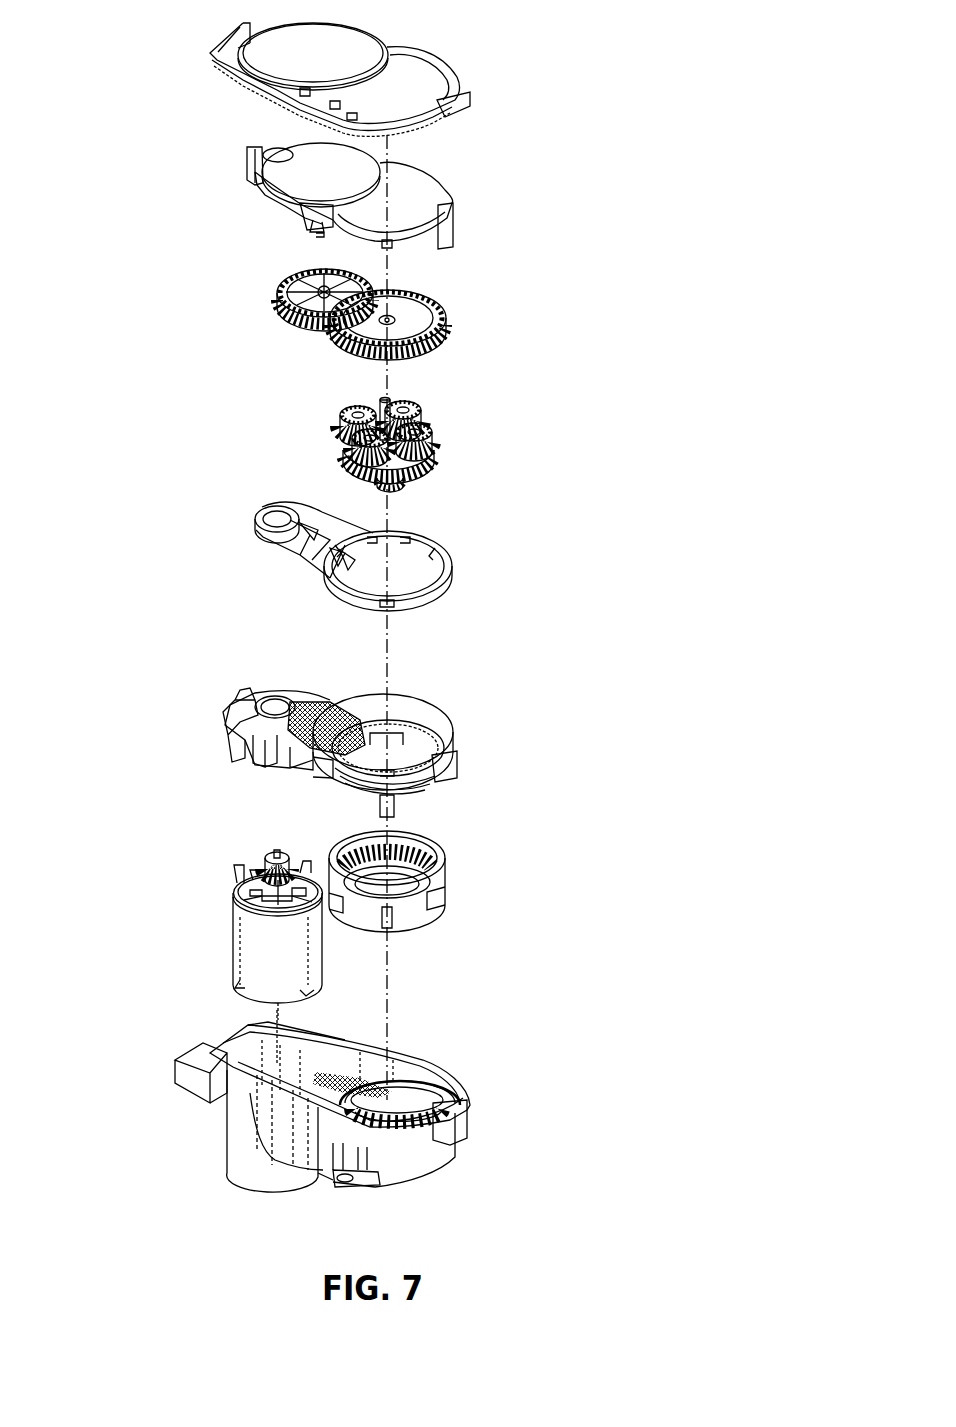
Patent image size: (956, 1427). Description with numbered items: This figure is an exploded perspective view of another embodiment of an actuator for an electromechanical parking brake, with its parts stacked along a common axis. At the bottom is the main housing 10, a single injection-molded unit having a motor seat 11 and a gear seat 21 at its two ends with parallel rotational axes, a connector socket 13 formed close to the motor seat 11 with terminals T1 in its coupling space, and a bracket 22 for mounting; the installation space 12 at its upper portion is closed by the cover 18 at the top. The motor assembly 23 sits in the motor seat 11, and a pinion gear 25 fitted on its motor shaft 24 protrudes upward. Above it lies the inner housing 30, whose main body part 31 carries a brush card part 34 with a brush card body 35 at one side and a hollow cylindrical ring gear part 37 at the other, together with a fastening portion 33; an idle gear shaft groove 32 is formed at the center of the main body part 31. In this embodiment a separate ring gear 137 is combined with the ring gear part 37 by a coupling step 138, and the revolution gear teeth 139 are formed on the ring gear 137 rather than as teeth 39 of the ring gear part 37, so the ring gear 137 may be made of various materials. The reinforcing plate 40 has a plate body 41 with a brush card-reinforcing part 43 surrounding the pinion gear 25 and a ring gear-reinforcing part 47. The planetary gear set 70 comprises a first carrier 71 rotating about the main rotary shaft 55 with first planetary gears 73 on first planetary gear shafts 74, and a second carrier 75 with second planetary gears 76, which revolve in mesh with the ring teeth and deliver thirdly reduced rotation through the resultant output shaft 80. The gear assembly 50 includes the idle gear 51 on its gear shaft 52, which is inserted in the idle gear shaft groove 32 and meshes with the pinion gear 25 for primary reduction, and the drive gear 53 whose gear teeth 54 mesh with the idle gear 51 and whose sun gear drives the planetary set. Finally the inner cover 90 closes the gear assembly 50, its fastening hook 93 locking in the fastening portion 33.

The main housing 10 is at (315, 1104).
The motor seat 11 is at (290, 1190).
The installation space 12 is at (413, 1070).
The connector socket 13 is at (177, 1070).
The cover 18 is at (425, 60).
The gear seat 21 is at (433, 1160).
The bracket 22 is at (363, 1187).
The motor assembly 23 is at (213, 920).
The motor shaft 24 is at (240, 883).
The pinion gear 25 is at (263, 857).
The inner housing 30 is at (351, 747).
The main body part 31 is at (293, 763).
The idle gear shaft groove 32 is at (333, 710).
The fastening portion 33 is at (450, 763).
The brush card part 34 is at (230, 710).
The brush card body 35 is at (250, 743).
The ring gear part 37 is at (423, 780).
The revolution gear teeth 39 is at (407, 738).
The reinforcing plate 40 is at (369, 554).
The plate body 41 is at (283, 552).
The brush card-reinforcing part 43 is at (268, 515).
The ring gear-reinforcing part 47 is at (447, 583).
The gear assembly 50 is at (435, 310).
The idle gear 51 is at (278, 302).
The gear shaft 52 is at (280, 288).
The drive gear 53 is at (407, 312).
The gear teeth 54 is at (445, 322).
The main rotary shaft 55 is at (388, 405).
The planetary gear set 70 is at (450, 437).
The first carrier 71 is at (433, 442).
The first planetary gears 73 is at (417, 415).
The first planetary gear shafts 74 is at (357, 410).
The second carrier 75 is at (343, 462).
The second planetary gears 76 is at (347, 440).
The resultant output shaft 80 is at (400, 480).
The inner cover 90 is at (427, 180).
The fastening hook 93 is at (247, 163).
The ring gear 137 is at (444, 897).
The coupling step 138 is at (393, 918).
The revolution gear teeth 139 is at (440, 863).
The terminals T1 is at (237, 1033).